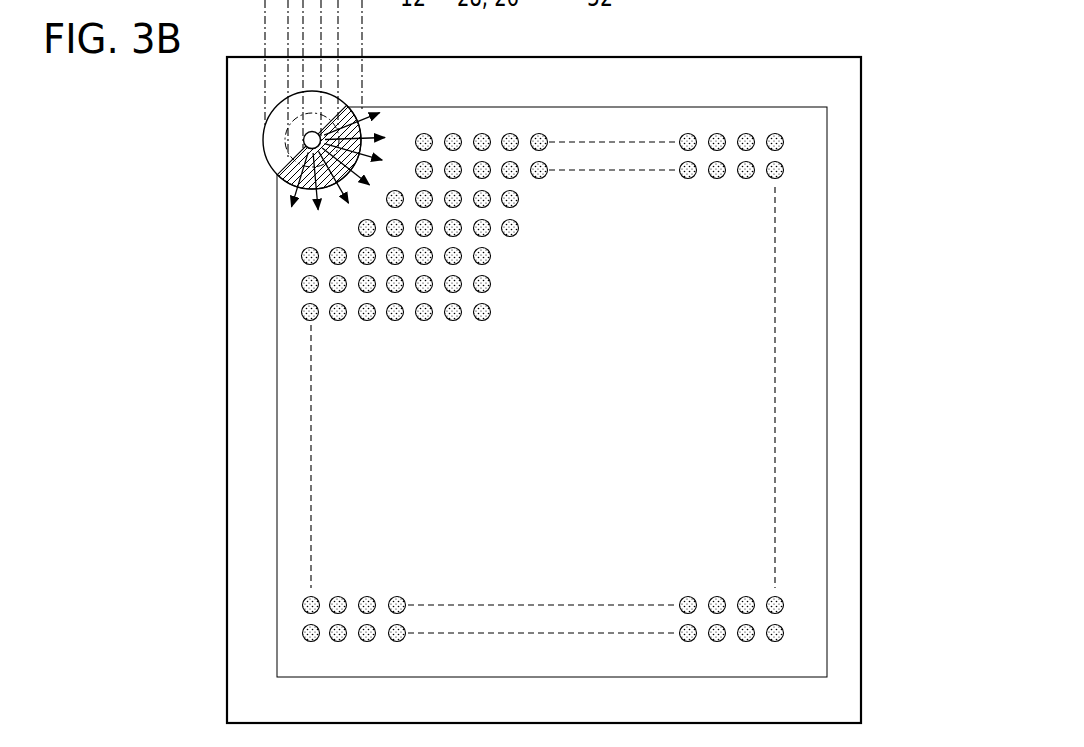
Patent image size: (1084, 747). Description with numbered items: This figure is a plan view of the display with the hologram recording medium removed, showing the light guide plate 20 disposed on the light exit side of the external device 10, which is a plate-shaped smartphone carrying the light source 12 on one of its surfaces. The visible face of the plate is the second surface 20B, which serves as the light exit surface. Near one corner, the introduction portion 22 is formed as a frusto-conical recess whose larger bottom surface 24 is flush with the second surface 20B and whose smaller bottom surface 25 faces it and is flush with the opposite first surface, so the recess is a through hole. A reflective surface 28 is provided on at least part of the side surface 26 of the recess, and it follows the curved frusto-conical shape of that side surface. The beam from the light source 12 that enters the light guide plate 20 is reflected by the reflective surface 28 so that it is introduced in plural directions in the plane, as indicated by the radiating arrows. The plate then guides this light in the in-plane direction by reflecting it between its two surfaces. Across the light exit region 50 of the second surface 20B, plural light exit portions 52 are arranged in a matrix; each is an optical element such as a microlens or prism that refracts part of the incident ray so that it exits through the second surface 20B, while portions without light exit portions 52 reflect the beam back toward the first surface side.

The external device 10 is at (591, 390).
The light guide plate 20 is at (861, 315).
The second surface 20B is at (829, 97).
The light exit region 50 is at (621, 266).
The light exit portions 52 is at (481, 134).
The light source 12 is at (317, 116).
The introduction portion 22 is at (269, 148).
The bottom surface 24 is at (277, 143).
The bottom surface 25 is at (304, 144).
The side surface 26 is at (269, 166).
The reflective surface 28 is at (308, 163).